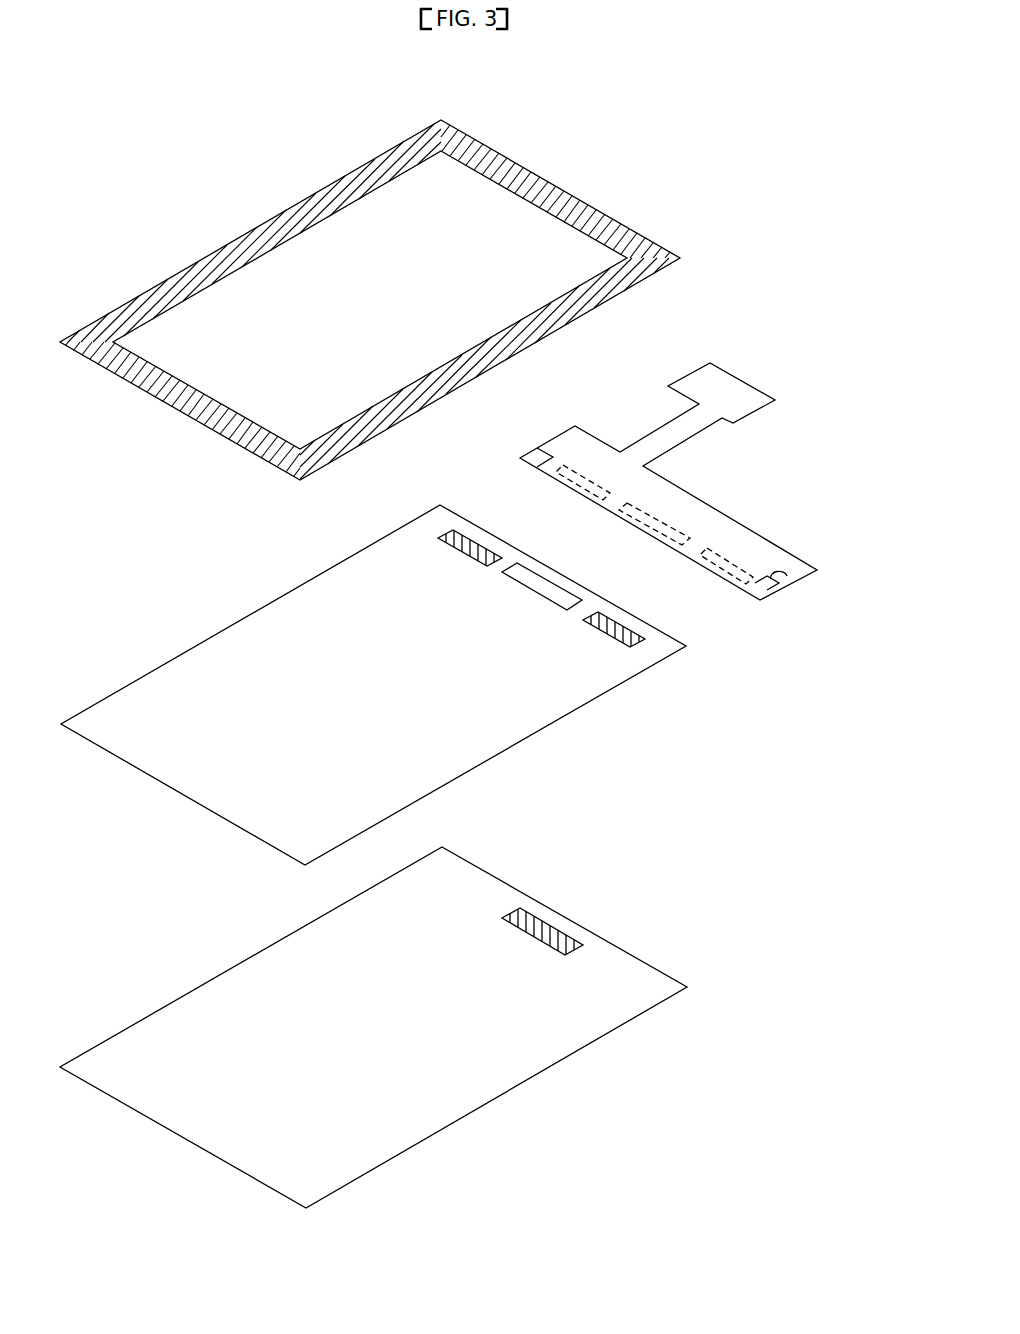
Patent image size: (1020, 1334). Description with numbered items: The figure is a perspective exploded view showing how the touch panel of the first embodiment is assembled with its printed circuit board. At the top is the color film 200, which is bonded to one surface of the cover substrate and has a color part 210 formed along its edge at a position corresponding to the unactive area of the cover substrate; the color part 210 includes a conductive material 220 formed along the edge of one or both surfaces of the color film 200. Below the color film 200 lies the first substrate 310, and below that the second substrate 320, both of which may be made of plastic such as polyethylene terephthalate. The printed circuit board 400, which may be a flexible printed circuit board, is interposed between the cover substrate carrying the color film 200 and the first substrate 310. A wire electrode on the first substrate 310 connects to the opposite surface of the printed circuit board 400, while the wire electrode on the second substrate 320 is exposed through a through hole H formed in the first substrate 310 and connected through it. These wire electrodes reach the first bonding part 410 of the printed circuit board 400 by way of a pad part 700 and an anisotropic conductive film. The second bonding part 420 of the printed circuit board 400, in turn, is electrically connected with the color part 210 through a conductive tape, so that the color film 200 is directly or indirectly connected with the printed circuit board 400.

The color film 200 is at (370, 284).
The color part 210 is at (372, 157).
The conductive material 220 is at (487, 218).
The first substrate 310 is at (237, 644).
The second substrate 320 is at (490, 1103).
The printed circuit board 400 is at (685, 507).
The first bonding part 410 is at (567, 482).
The second bonding part 420 is at (531, 457).
The pad part 700 is at (451, 528).
The through hole H is at (542, 588).